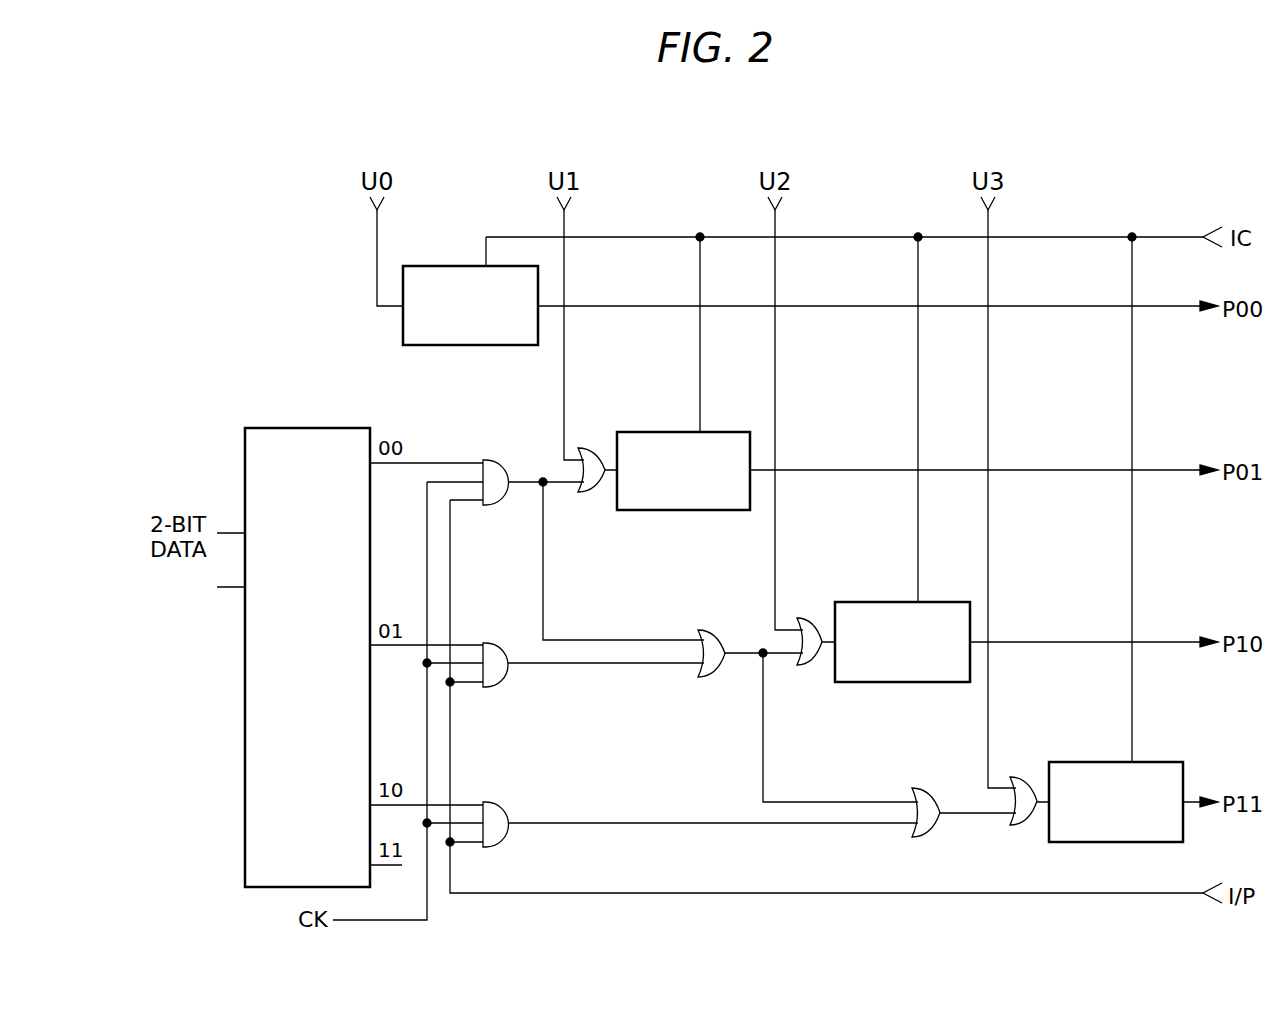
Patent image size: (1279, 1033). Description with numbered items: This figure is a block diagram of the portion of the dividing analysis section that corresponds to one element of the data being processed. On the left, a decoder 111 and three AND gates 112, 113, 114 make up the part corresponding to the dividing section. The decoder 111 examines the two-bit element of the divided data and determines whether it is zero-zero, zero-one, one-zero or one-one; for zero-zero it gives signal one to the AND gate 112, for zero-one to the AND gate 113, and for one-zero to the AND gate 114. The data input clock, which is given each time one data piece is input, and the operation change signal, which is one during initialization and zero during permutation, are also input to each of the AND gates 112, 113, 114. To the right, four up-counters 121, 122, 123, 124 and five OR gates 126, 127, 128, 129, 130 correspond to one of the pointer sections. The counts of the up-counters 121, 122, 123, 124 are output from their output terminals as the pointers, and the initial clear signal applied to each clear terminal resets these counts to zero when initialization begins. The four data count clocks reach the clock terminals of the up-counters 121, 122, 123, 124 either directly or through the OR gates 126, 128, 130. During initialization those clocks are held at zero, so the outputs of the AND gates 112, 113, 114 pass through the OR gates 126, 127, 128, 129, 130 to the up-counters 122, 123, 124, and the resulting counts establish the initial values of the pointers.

The decoder 111 is at (334, 428).
The AND gate 112 is at (500, 460).
The AND gate 113 is at (500, 643).
The AND gate 114 is at (500, 802).
The up-counter 121 is at (440, 266).
The up-counter 122 is at (648, 432).
The up-counter 123 is at (868, 602).
The up-counter 124 is at (1082, 762).
The OR gate 126 is at (591, 494).
The OR gate 127 is at (712, 680).
The OR gate 128 is at (810, 668).
The OR gate 129 is at (925, 787).
The OR gate 130 is at (1025, 776).